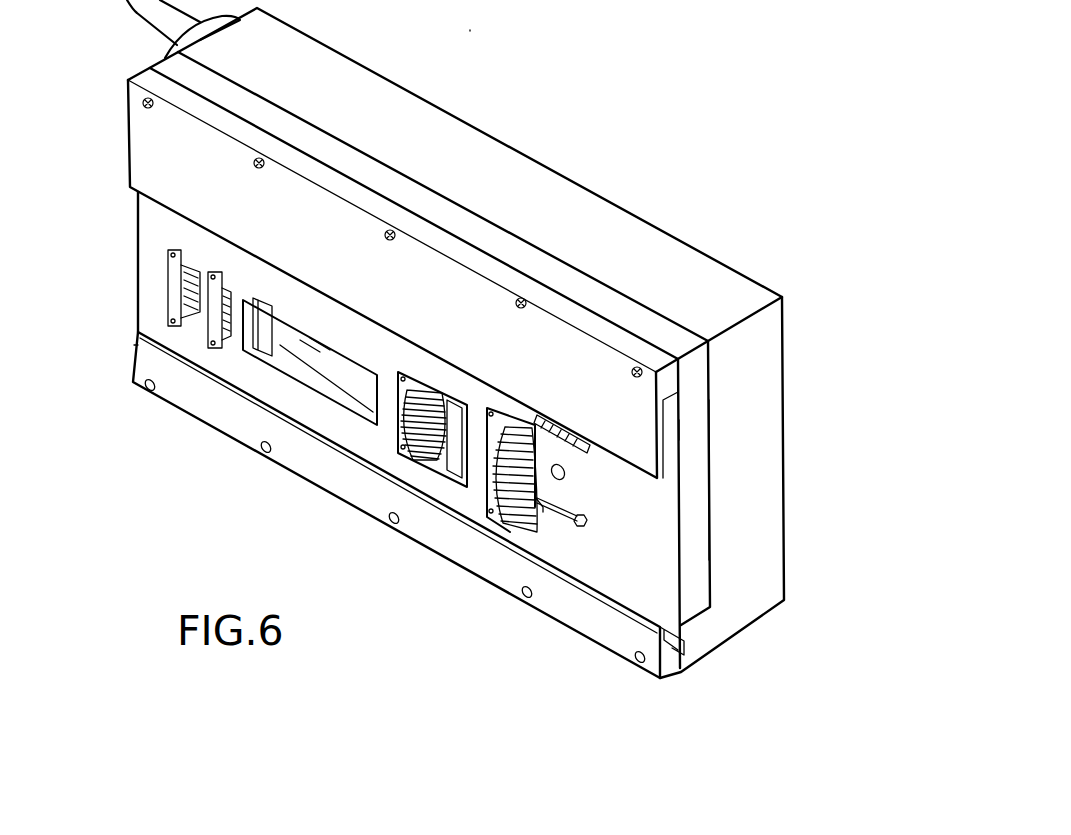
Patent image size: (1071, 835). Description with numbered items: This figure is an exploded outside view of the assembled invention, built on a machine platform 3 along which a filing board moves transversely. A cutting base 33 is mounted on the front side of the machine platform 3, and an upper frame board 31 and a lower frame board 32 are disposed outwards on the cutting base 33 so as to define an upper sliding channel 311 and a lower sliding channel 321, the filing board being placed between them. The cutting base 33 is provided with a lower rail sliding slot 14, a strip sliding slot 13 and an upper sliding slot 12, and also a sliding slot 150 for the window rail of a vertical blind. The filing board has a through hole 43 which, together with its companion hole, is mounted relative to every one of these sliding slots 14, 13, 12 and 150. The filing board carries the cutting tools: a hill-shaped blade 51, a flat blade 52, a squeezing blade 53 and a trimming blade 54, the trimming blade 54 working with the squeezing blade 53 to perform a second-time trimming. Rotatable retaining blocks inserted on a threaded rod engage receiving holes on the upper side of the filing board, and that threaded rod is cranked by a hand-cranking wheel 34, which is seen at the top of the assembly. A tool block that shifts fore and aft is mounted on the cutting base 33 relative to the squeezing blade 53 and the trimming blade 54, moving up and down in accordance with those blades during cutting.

The machine platform 3 is at (784, 300).
The upper frame board 31 is at (146, 147).
The lower frame board 32 is at (133, 352).
The cutting base 33 is at (703, 388).
The hand-cranking wheel 34 is at (135, 14).
The upper sliding channel 311 is at (672, 427).
The lower sliding channel 321 is at (676, 632).
The upper sliding slot 12 is at (460, 447).
The strip sliding slot 13 is at (353, 380).
The lower rail sliding slot 14 is at (250, 332).
The through hole 43 is at (466, 19).
The hill-shaped blade 51 is at (498, 517).
The flat blade 52 is at (397, 457).
The squeezing blade 53 is at (172, 316).
The trimming blade 54 is at (136, 337).
The sliding slot 150 is at (572, 517).